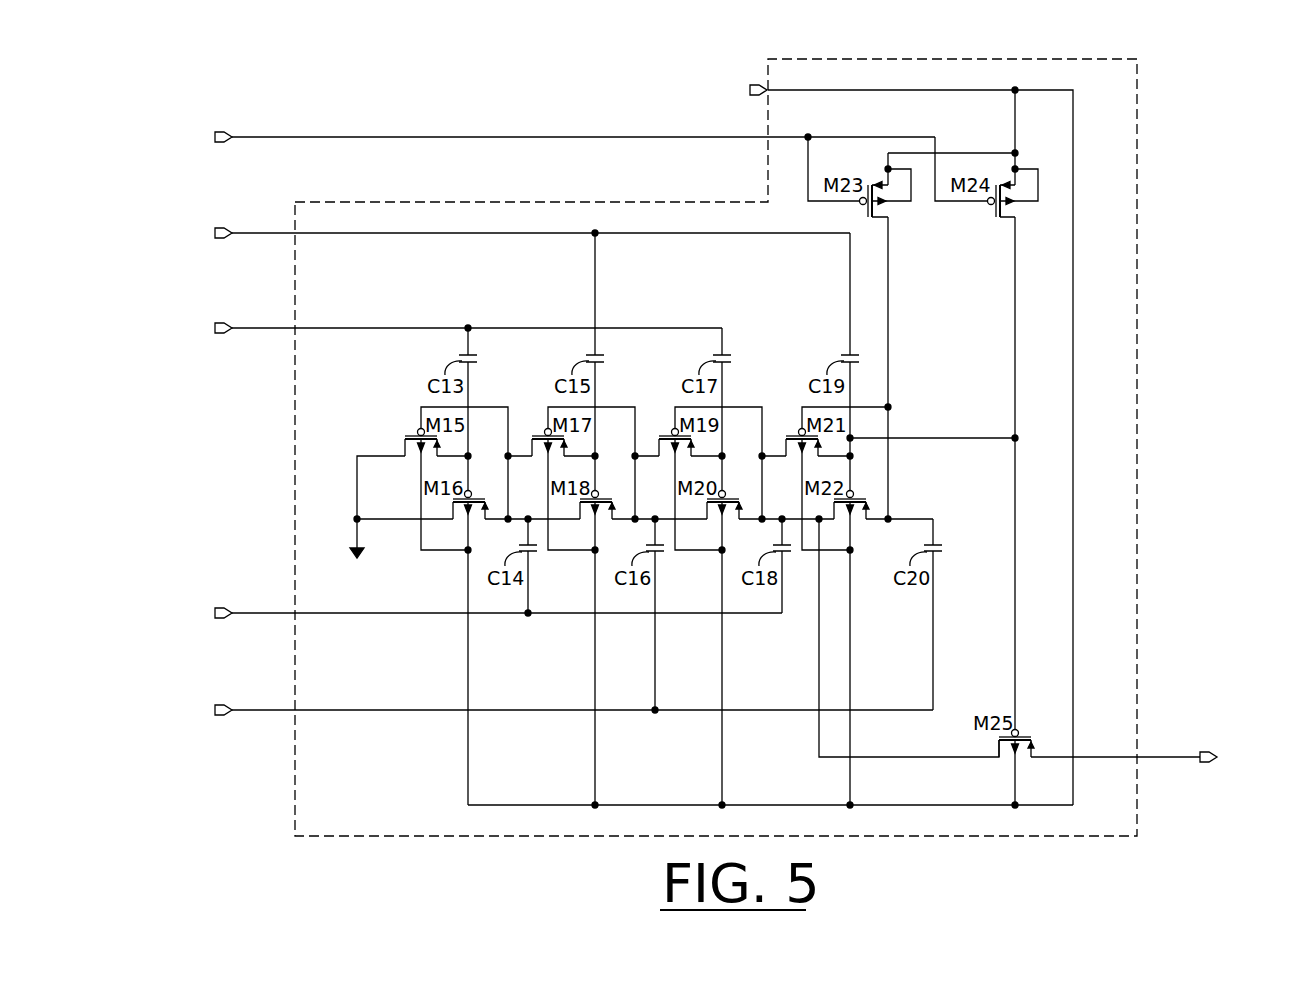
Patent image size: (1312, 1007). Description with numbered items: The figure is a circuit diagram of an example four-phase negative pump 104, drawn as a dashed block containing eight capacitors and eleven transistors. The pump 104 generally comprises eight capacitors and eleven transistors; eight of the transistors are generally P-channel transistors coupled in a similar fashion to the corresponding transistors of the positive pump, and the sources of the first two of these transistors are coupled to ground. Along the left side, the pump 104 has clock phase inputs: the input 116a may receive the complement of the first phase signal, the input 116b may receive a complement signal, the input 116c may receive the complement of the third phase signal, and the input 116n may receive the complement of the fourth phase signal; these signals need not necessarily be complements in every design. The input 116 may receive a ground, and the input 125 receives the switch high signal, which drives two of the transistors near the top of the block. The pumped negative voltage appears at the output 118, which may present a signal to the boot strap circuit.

The negative pump 104 is at (323, 201).
The input 116 is at (762, 92).
The input 125 is at (767, 142).
The input 116a is at (292, 616).
The input 116b is at (292, 236).
The input 116c is at (292, 713).
The input 116n is at (292, 331).
The output 118 is at (1138, 757).